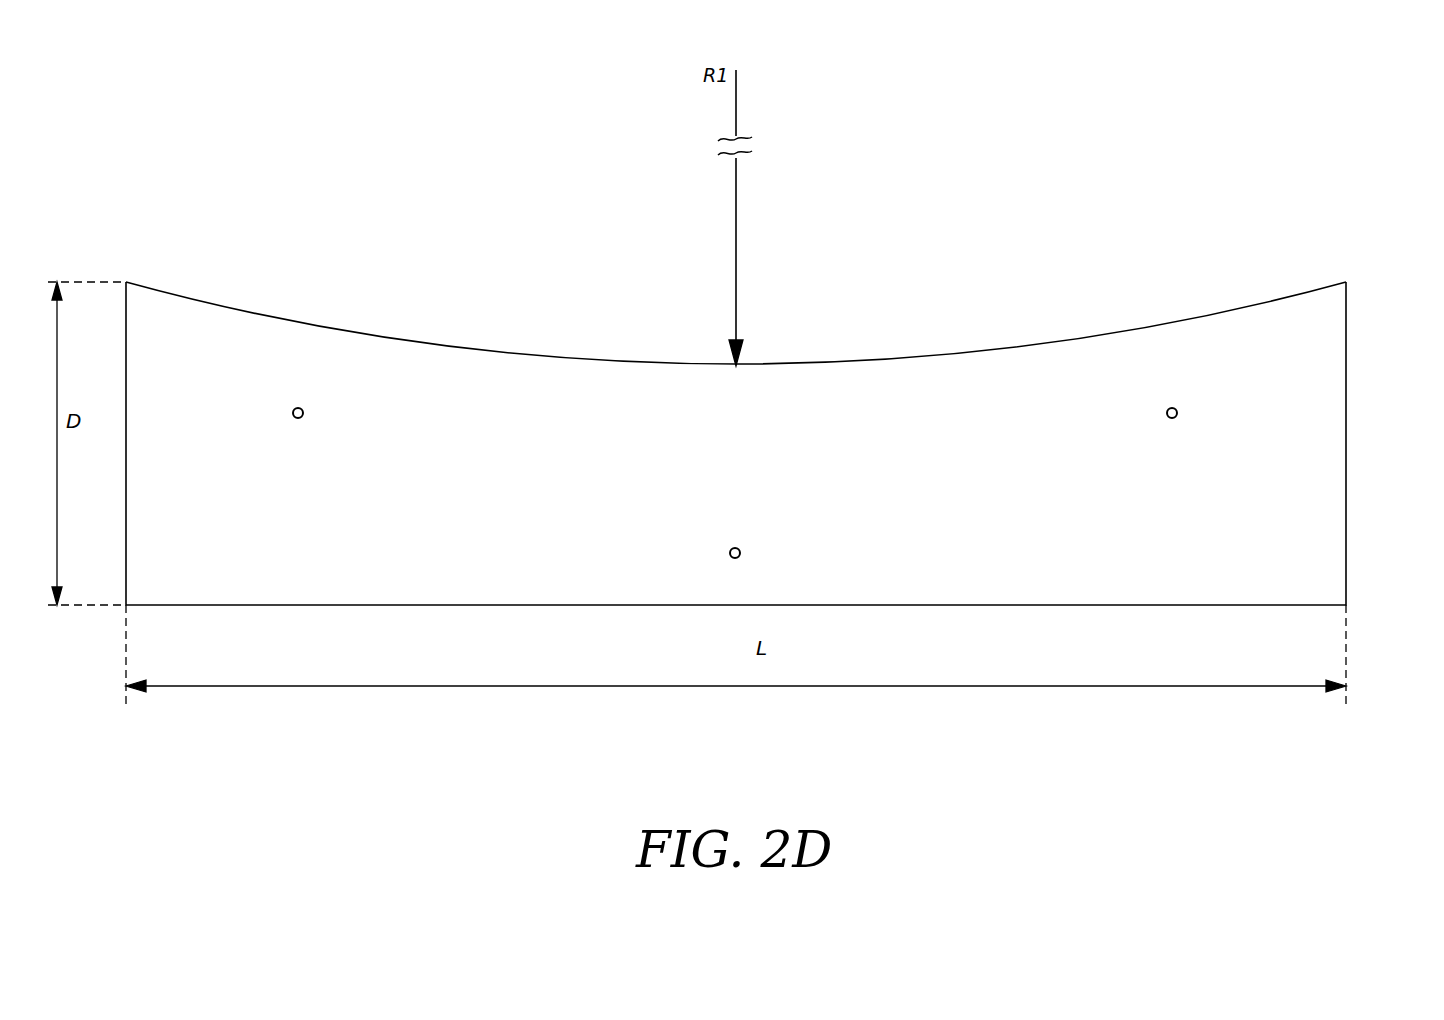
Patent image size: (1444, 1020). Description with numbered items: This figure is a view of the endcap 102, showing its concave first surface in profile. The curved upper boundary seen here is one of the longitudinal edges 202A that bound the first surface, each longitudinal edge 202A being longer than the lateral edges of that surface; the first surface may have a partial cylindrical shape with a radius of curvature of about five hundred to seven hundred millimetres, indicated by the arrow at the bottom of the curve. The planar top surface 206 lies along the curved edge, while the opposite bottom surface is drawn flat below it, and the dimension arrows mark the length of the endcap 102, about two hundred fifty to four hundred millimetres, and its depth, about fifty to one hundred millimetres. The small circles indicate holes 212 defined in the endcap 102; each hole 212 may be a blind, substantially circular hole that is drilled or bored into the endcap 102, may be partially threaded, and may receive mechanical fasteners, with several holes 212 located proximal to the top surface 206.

The endcap 102 is at (1371, 159).
The longitudinal edge 202A is at (892, 358).
The top surface 206 is at (1328, 340).
The holes 212 is at (298, 407).